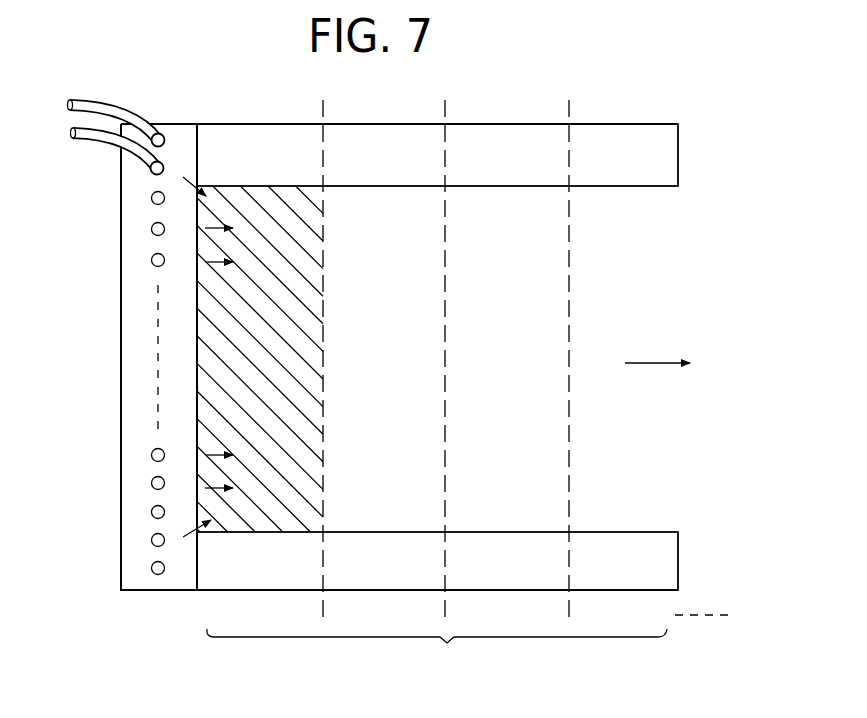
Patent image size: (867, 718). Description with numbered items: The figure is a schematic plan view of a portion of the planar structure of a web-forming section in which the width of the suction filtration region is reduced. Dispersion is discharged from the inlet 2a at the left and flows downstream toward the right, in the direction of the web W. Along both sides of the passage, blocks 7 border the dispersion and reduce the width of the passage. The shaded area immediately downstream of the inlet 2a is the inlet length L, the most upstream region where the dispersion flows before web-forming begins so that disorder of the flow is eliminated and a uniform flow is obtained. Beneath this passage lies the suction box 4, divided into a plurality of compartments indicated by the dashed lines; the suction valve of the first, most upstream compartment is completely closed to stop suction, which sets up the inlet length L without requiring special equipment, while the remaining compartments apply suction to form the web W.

The block 7 is at (670, 152).
The inlet 2a is at (121, 532).
The inlet length L is at (259, 196).
The web W is at (676, 365).
The suction box 4 is at (437, 640).